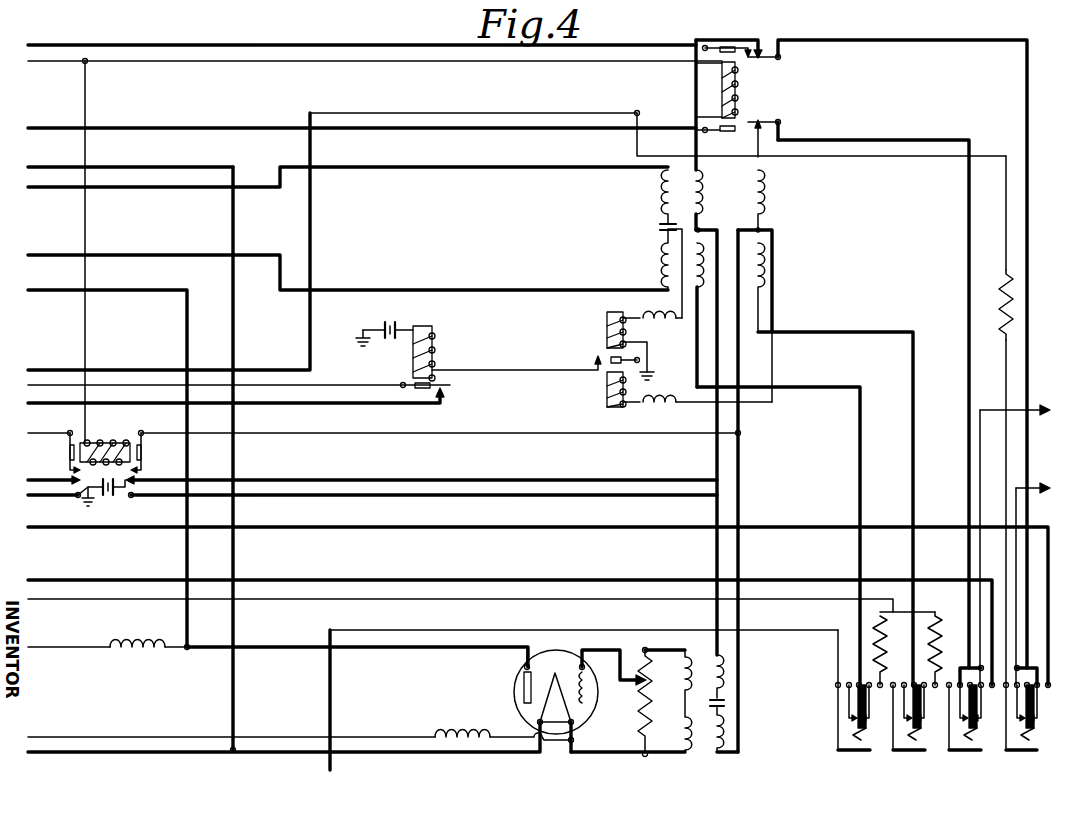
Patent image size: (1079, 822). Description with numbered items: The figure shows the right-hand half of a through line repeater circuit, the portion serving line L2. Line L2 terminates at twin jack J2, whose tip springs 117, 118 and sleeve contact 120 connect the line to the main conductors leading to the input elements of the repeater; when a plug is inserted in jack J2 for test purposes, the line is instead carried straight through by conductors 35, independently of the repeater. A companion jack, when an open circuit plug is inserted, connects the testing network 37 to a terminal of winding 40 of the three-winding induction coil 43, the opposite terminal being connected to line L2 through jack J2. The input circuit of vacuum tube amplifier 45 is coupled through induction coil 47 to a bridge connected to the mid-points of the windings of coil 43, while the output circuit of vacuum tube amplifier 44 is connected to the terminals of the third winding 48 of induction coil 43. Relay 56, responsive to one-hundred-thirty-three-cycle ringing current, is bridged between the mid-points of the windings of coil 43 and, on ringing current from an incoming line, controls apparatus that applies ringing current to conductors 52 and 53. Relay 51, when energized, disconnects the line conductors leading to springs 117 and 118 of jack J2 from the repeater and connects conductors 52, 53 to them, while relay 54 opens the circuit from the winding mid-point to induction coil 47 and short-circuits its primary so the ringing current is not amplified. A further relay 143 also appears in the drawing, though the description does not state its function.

The conductor 52 is at (148, 41).
The conductor 53 is at (93, 130).
The relay 51 is at (737, 96).
The third winding 48 is at (662, 268).
The vacuum tube amplifier 44 is at (704, 200).
The three-winding induction coil 43 is at (718, 249).
The winding 40 is at (768, 268).
The relay 56 is at (607, 334).
The relay 143 is at (446, 343).
The relay 54 is at (105, 461).
The conductors 35 is at (458, 529).
The induction coil 47 is at (705, 655).
The vacuum tube amplifier 45 is at (522, 694).
The testing network 37 is at (942, 636).
The tip spring 117 is at (970, 733).
The tip spring 118 is at (1030, 733).
The sleeve contact 120 is at (1013, 749).
The jack J2 is at (997, 746).
The line L2 is at (1033, 445).